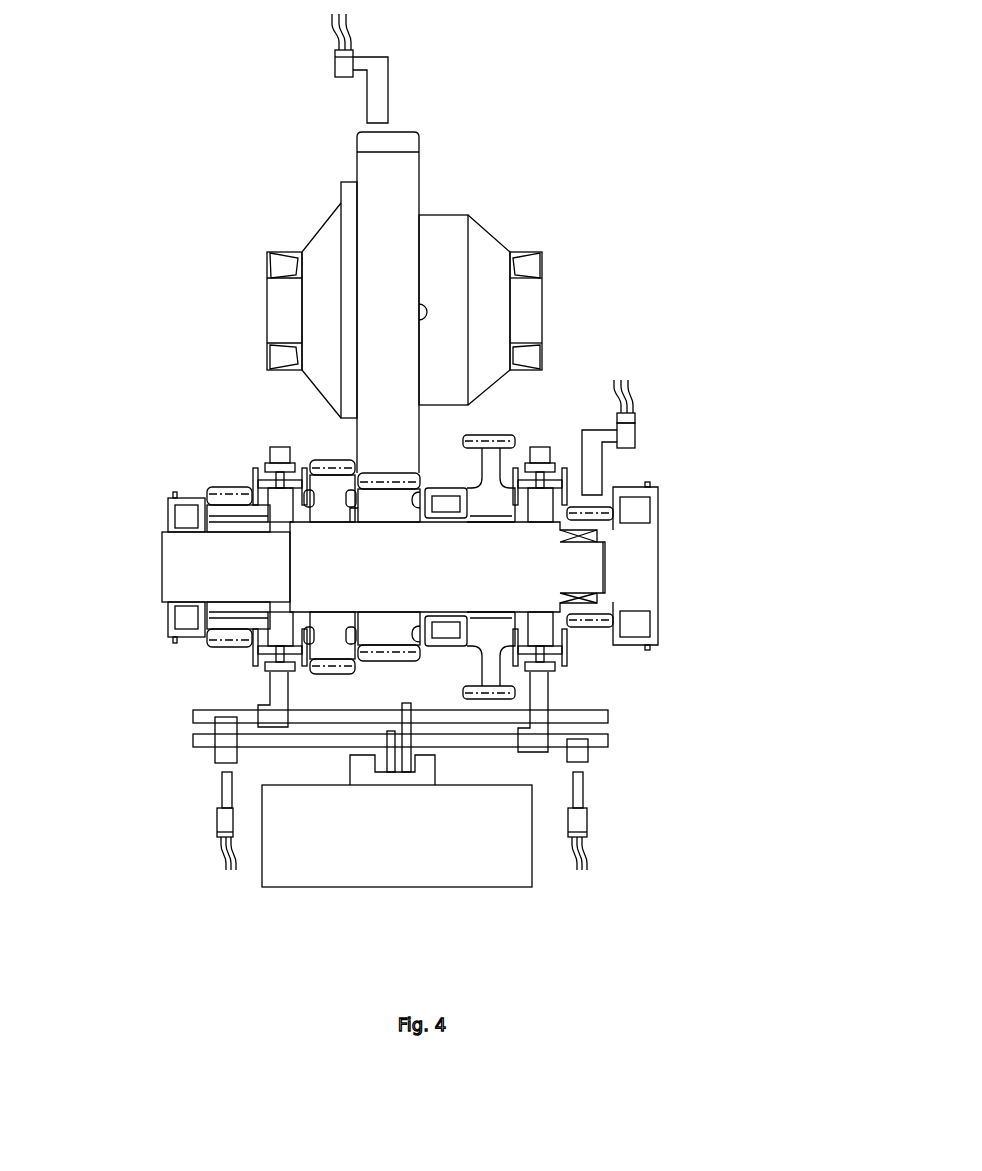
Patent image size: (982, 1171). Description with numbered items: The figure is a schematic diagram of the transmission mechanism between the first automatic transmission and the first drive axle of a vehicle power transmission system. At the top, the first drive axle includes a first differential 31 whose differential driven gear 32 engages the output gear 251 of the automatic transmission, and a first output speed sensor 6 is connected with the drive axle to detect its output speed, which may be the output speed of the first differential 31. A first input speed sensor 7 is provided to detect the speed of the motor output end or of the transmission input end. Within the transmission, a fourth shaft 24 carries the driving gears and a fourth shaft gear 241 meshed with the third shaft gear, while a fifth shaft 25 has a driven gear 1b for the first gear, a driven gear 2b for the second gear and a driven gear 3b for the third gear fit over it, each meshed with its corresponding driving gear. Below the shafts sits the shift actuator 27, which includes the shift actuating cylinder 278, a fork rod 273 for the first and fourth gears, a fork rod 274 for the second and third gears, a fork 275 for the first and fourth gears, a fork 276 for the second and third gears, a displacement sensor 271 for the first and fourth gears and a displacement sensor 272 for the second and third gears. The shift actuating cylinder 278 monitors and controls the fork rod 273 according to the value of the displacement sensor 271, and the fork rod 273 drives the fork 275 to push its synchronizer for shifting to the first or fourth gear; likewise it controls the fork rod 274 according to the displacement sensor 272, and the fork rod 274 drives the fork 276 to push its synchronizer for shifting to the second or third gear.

The first output speed sensor 6 is at (340, 67).
The differential driven gear 32 is at (398, 168).
The first differential 31 is at (443, 229).
The output gear 251 is at (398, 488).
The driven gear for the first gear 1b is at (493, 462).
The driven gear for the second gear 2b is at (337, 486).
The driven gear for the third gear 3b is at (228, 502).
The fifth shaft 25 is at (185, 553).
The fourth shaft gear 241 is at (590, 523).
The fourth shaft 24 is at (632, 573).
The first input speed sensor 7 is at (623, 441).
The fork for the second and third gears 276 is at (285, 702).
The fork for the first and fourth gears 275 is at (538, 703).
The fork rod for the second and third gears 274 is at (200, 715).
The fork rod for the first and fourth gears 273 is at (603, 742).
The displacement sensor for the second and third gears 272 is at (223, 823).
The displacement sensor for the first and fourth gears 271 is at (578, 822).
The shift actuator 27 is at (397, 908).
The shift actuating cylinder 278 is at (460, 877).